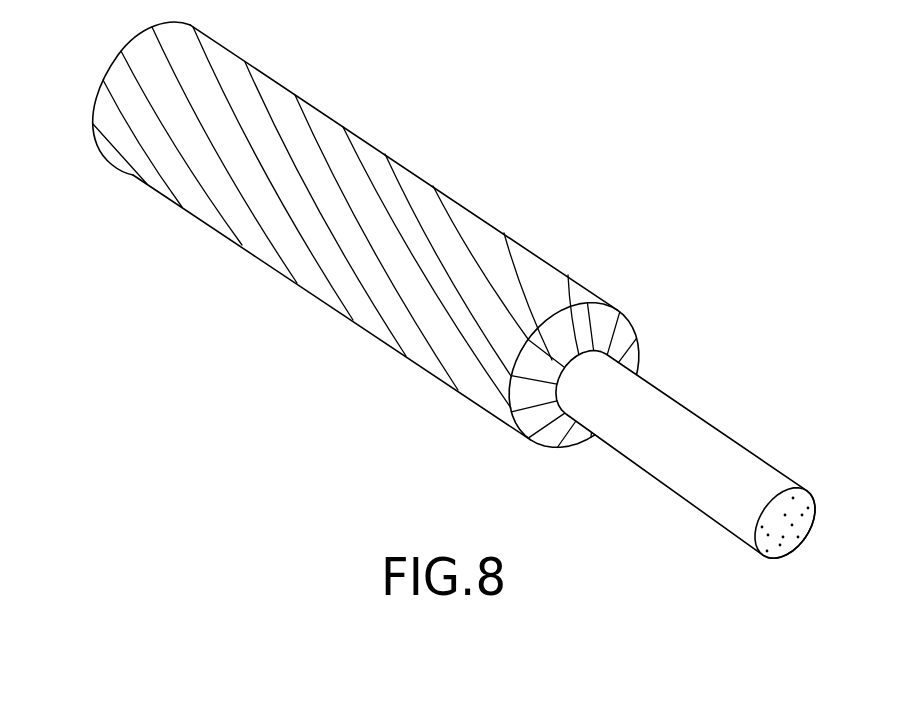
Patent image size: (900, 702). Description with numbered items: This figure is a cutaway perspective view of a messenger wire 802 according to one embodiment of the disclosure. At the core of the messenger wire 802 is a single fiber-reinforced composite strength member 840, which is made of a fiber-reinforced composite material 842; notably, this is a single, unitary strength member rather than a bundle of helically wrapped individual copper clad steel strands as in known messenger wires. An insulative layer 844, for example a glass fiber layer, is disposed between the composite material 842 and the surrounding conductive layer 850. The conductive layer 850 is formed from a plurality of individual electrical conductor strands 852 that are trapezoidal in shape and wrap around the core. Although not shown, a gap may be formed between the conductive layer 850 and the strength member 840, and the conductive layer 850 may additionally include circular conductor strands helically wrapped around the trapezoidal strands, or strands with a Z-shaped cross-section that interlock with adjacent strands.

The messenger wire 802 is at (489, 290).
The conductive layer 850 is at (371, 130).
The electrical conductor strands 852 is at (540, 448).
The fiber-reinforced composite strength member 840 is at (720, 455).
The insulative layer 844 is at (783, 476).
The fiber-reinforced composite material 842 is at (807, 517).